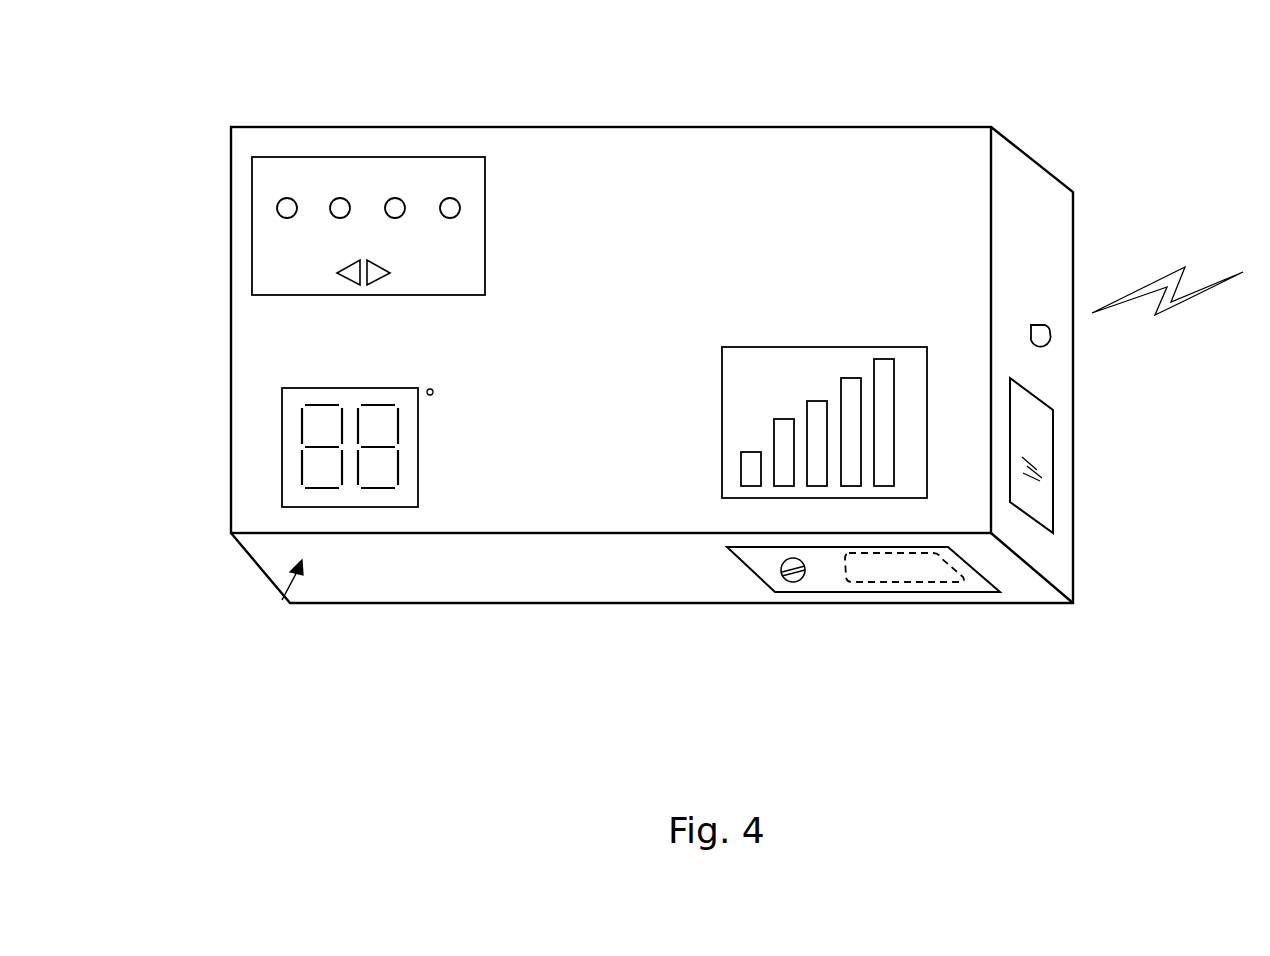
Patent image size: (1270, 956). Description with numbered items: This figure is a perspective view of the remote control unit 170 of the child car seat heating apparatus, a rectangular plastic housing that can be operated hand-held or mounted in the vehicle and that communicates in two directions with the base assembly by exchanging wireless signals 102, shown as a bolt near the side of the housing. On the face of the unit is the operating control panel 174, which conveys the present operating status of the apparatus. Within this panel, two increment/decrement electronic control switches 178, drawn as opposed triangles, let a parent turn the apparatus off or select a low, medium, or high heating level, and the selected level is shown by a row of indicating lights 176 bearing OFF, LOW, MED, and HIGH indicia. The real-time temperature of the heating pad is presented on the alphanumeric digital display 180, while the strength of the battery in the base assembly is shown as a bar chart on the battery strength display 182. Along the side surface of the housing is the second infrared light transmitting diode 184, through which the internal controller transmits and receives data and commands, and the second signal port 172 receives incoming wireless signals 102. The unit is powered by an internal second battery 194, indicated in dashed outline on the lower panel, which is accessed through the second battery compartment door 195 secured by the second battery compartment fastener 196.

The wireless signal 102 is at (1187, 302).
The remote control unit 170 is at (297, 601).
The second signal port 172 is at (1038, 500).
The operating control panel 174 is at (467, 258).
The indicating lights 176 is at (440, 177).
The increment/decrement electronic control switches 178 is at (382, 270).
The alphanumeric digital display 180 is at (295, 500).
The battery strength display 182 is at (912, 358).
The second infrared light transmitting diode 184 is at (1052, 337).
The second battery 194 is at (905, 582).
The second battery compartment door 195 is at (827, 592).
The second battery compartment fastener 196 is at (785, 577).